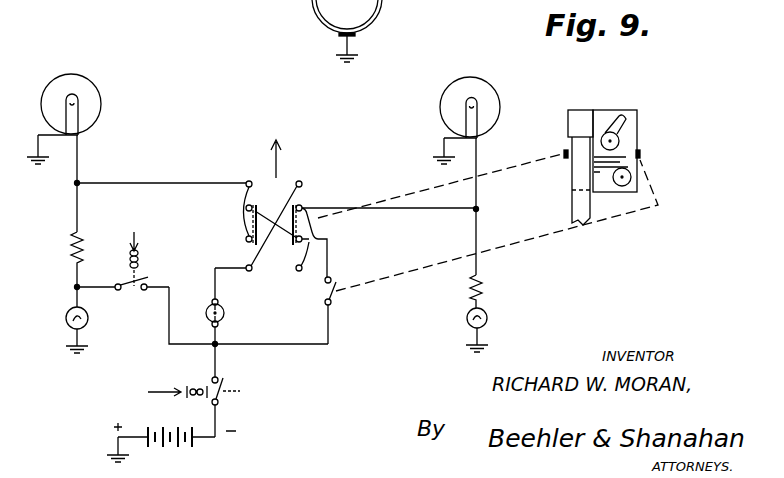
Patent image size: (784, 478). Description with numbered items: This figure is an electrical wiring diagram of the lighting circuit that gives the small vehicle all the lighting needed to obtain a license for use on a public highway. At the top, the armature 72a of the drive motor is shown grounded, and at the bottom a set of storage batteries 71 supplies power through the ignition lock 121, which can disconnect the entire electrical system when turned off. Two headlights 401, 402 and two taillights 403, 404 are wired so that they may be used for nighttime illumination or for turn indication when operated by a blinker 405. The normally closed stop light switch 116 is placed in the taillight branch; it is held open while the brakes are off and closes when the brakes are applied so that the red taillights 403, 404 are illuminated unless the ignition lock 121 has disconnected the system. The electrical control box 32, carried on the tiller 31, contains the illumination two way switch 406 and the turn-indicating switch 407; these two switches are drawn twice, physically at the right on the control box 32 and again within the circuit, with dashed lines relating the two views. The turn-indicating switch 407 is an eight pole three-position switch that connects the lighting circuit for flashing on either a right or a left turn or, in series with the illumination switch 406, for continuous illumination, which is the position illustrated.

The tiller 31 is at (571, 206).
The electrical control box 32 is at (637, 118).
The storage batteries 71 is at (183, 430).
The armature of motor 72a is at (372, 22).
The stop light switch 116 is at (140, 255).
The ignition lock 121 is at (225, 394).
The headlight 401 is at (101, 104).
The headlight 402 is at (500, 112).
The taillight 403 is at (88, 320).
The taillight 404 is at (487, 312).
The blinker 405 is at (222, 305).
The illumination two way switch 406 is at (333, 303).
The turn-indicating switch 407 is at (305, 197).